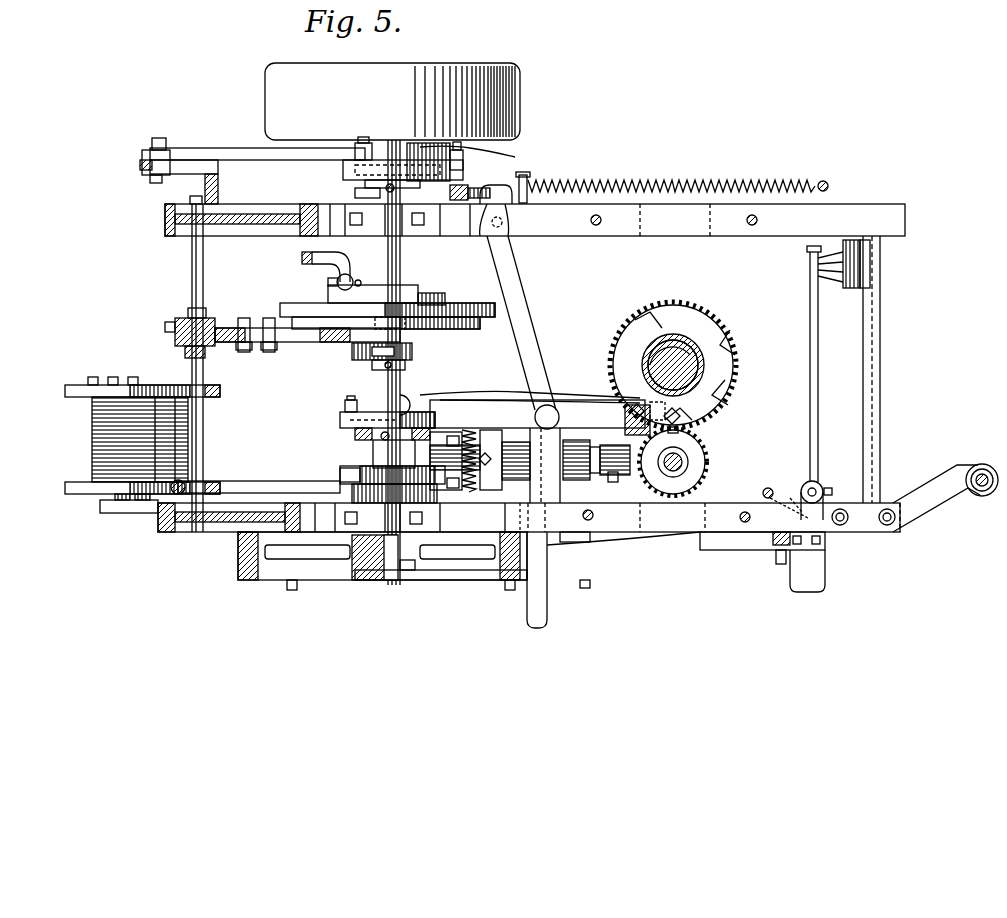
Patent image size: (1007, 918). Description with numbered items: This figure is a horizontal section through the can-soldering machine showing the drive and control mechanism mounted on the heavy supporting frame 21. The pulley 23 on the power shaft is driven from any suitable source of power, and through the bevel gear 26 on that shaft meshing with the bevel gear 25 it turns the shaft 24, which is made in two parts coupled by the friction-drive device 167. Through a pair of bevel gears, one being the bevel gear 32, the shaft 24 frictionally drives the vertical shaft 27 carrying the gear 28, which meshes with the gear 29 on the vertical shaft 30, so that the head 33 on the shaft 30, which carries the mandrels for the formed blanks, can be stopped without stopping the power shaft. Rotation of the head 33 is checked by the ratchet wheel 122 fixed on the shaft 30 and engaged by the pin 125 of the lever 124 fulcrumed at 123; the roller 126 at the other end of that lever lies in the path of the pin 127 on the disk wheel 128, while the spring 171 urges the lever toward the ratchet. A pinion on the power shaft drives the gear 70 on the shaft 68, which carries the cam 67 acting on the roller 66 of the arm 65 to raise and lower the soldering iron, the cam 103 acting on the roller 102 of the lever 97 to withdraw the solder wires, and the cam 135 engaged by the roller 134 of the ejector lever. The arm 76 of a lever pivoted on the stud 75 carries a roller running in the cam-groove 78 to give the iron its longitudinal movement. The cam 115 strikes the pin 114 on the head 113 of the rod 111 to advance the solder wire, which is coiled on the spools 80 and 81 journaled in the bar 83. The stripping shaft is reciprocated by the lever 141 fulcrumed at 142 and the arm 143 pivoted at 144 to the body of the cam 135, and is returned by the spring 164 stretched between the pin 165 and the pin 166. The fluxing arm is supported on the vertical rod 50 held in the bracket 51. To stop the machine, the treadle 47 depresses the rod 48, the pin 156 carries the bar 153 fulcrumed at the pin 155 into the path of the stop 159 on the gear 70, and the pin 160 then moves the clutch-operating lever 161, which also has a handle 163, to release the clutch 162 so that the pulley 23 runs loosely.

The supporting frame 21 is at (858, 214).
The pulley 23 is at (518, 100).
The shaft 24 is at (530, 376).
The bevel gear 25 is at (373, 452).
The bevel gear 26 is at (355, 432).
The vertical shaft 27 is at (685, 462).
The gear 28 is at (700, 470).
The gear 29 is at (690, 418).
The vertical shaft 30 is at (700, 366).
The bevel gear 32 is at (565, 482).
The head 33 is at (702, 350).
The treadle 47 is at (810, 582).
The rod 48 is at (768, 490).
The vertical rod 50 is at (984, 465).
The bracket 51 is at (932, 512).
The arm 65 is at (355, 345).
The roller 66 is at (355, 352).
The cam 67 is at (368, 366).
The shaft 68 is at (401, 268).
The gear 70 is at (238, 560).
The stud or shaft 75 is at (190, 277).
The arm 76 is at (290, 340).
The cam-groove 78 is at (498, 311).
The spool 80 is at (88, 490).
The spool 81 is at (145, 512).
The bar 83 is at (118, 508).
The lever 97 is at (300, 260).
The roller 102 is at (337, 282).
The cam 103 is at (430, 295).
The rod 111 is at (300, 487).
The head 113 is at (370, 548).
The pin 114 is at (340, 474).
The cam 115 is at (432, 494).
The ratchet wheel 122 is at (695, 322).
The fulcrum 123 is at (549, 405).
The lever 124 is at (592, 412).
The pin 125 is at (635, 405).
The roller 126 is at (405, 400).
The pin 127 is at (357, 390).
The disk wheel 128 is at (340, 419).
The roller 134 is at (455, 168).
The cam 135 is at (380, 168).
The lever 141 is at (175, 172).
The fulcrum 142 is at (218, 192).
The arm 143 is at (245, 152).
The pivot 144 is at (360, 143).
The bar 153 is at (480, 580).
The pin 155 is at (585, 590).
The pin 156 is at (776, 557).
The stop 159 is at (290, 588).
The pin 160 is at (508, 590).
The clutch-operating lever 161 is at (515, 300).
The clutch 162 is at (482, 175).
The handle 163 is at (530, 625).
The spring 164 is at (752, 170).
The pin 165 is at (840, 174).
The pin 166 is at (530, 185).
The friction-drive device 167 is at (552, 488).
The spring 171 is at (467, 430).